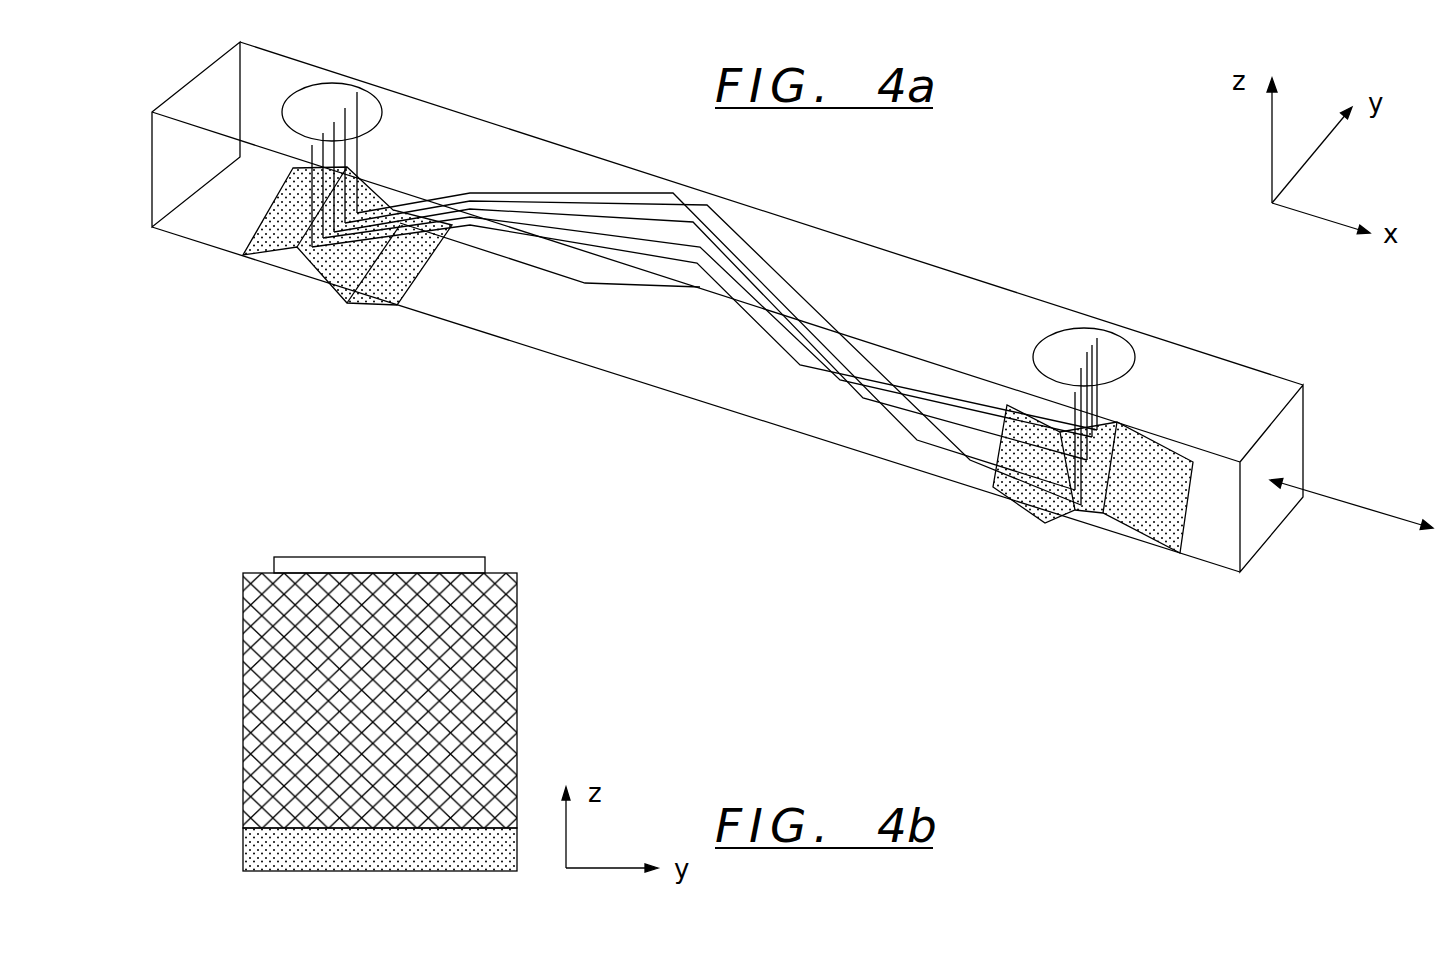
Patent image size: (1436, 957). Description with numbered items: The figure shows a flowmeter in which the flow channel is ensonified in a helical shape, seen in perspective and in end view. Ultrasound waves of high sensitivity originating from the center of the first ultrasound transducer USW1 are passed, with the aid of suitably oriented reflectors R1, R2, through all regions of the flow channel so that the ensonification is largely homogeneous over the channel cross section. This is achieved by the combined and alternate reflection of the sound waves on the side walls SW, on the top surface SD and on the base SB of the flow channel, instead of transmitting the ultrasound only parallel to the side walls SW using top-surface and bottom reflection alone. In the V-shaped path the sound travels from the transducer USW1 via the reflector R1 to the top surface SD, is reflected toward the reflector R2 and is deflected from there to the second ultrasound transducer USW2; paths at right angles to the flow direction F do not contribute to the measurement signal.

In FIG. 4A, the side walls SW is at (173, 95).
In FIG. 4B, the side walls SW is at (243, 688).
In FIG. 4A, the top surface SD is at (838, 253).
In FIG. 4A, the base SB is at (1253, 533).
In FIG. 4A, the first ultrasound transducer USW1 is at (367, 103).
In FIG. 4B, the first ultrasound transducer USW1 is at (367, 557).
In FIG. 4A, the second ultrasound transducer USW2 is at (1112, 342).
In FIG. 4A, the first reflector R1 is at (327, 278).
In FIG. 4B, the first reflector R1 is at (268, 851).
In FIG. 4A, the second reflector R2 is at (1127, 528).
In FIG. 4A, the flow direction F is at (1353, 502).